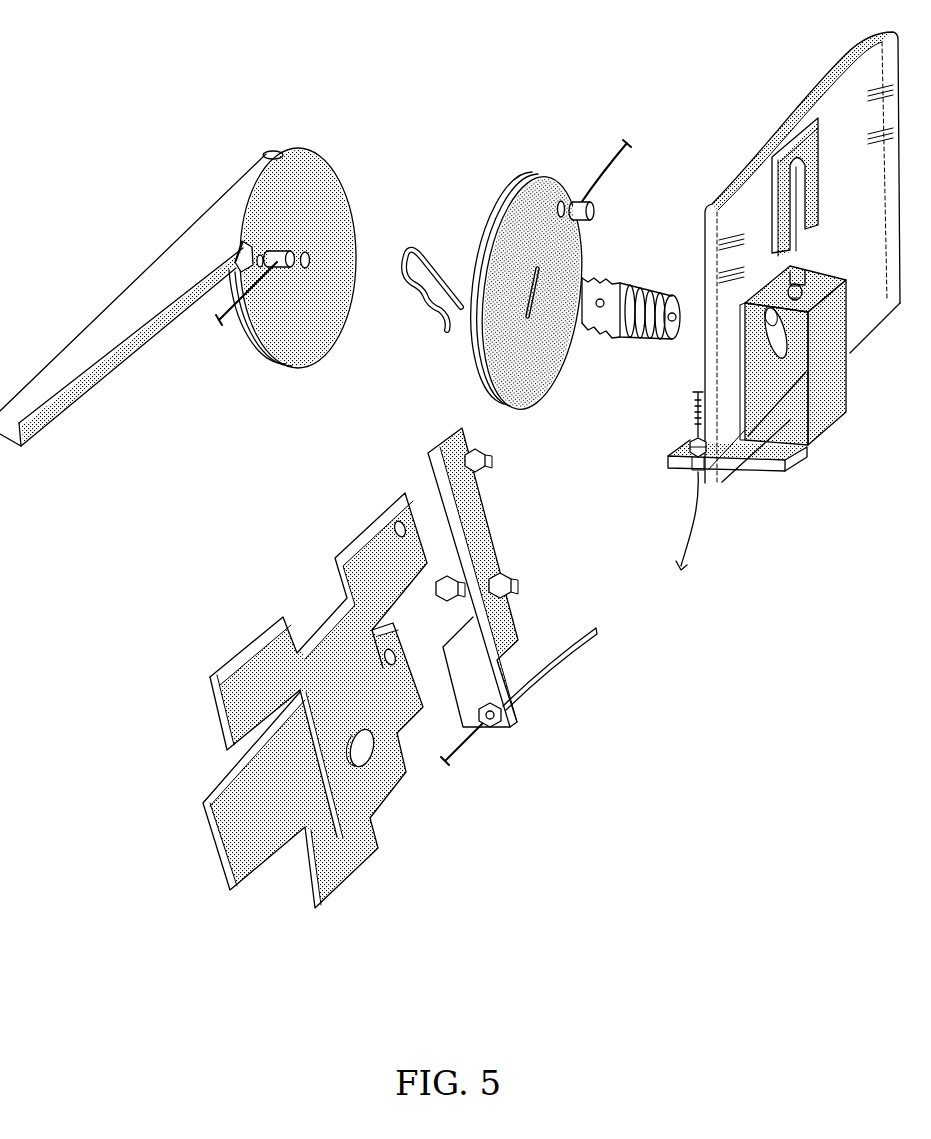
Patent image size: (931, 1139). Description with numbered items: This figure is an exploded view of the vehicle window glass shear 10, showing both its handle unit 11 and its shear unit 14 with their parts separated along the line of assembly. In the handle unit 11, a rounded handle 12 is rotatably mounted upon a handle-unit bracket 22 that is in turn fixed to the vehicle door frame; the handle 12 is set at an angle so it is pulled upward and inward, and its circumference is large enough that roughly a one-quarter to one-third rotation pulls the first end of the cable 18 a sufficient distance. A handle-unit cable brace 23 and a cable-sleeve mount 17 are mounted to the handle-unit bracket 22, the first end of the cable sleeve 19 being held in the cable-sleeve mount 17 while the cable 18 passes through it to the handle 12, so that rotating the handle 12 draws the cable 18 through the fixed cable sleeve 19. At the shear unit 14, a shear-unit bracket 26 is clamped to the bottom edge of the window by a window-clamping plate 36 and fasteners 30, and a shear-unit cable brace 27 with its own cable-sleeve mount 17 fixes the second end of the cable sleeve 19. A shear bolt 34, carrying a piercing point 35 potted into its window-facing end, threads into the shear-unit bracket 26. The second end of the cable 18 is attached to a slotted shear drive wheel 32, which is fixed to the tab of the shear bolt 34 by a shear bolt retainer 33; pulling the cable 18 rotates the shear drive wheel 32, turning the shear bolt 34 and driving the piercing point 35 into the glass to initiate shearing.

The vehicle window glass shear 10 is at (88, 38).
The handle unit 11 is at (174, 163).
The handle 12 is at (156, 262).
The shear unit 14 is at (443, 190).
The cable-sleeve mount 17 is at (688, 445).
The cable 18 is at (237, 323).
The cable sleeve 19 is at (694, 531).
The handle-unit bracket 22 is at (268, 558).
The handle-unit cable brace 23 is at (518, 625).
The shear-unit bracket 26 is at (840, 412).
The shear-unit cable brace 27 is at (762, 476).
The fasteners 30 is at (798, 283).
The shear drive wheel 32 is at (553, 373).
The shear bolt retainer 33 is at (428, 313).
The shear bolt 34 is at (628, 281).
The piercing point 35 is at (676, 321).
The window-clamping plate 36 is at (817, 148).